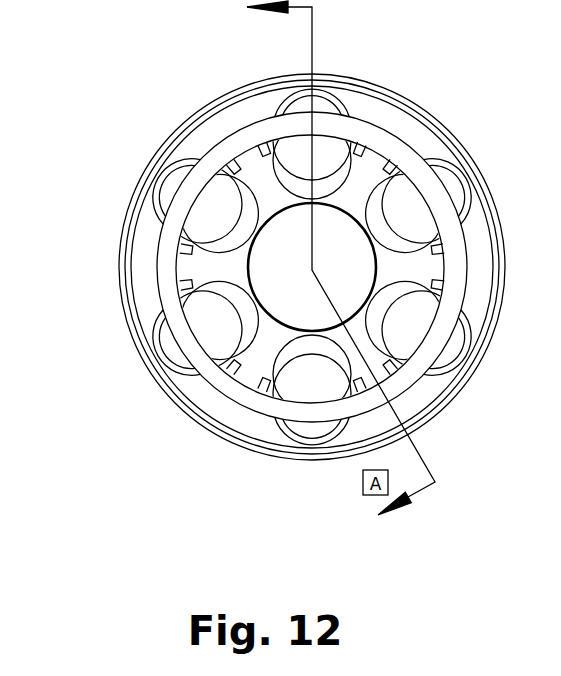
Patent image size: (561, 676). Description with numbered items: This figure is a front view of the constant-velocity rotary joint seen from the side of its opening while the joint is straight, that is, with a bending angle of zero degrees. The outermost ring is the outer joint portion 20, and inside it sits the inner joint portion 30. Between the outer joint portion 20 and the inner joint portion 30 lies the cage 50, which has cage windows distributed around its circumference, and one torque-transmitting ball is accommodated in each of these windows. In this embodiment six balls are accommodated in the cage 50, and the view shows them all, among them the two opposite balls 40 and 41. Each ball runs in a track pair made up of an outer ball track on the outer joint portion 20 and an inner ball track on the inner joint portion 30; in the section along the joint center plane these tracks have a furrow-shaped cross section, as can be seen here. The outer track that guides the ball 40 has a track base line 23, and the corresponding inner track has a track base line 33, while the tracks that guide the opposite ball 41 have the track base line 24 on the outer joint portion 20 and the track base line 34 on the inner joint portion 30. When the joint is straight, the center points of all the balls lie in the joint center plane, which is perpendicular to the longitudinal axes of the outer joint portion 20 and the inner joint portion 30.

The outer joint portion 20 is at (417, 140).
The track base line 23 is at (286, 83).
The track base line 24 is at (316, 455).
The inner joint portion 30 is at (212, 263).
The track base line 33 is at (314, 205).
The track base line 34 is at (310, 329).
The ball 40 is at (333, 95).
The ball 41 is at (295, 381).
The cage 50 is at (182, 195).